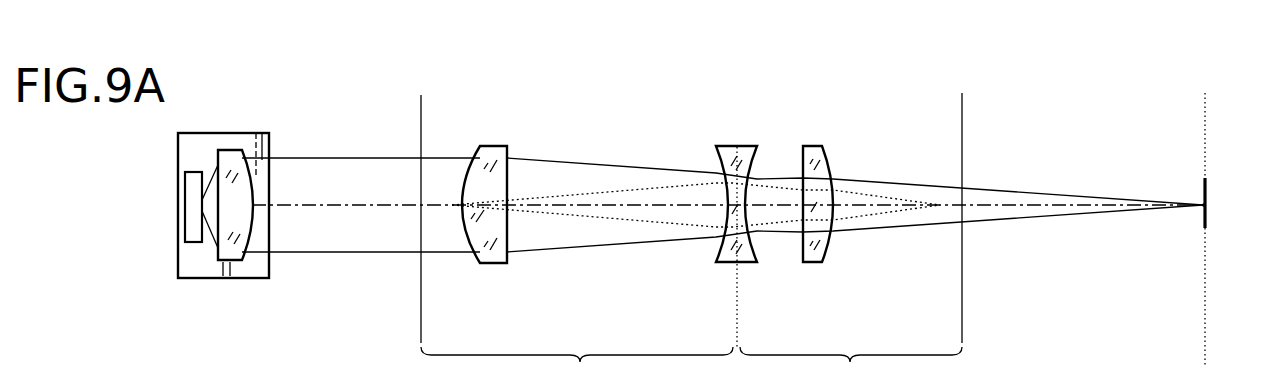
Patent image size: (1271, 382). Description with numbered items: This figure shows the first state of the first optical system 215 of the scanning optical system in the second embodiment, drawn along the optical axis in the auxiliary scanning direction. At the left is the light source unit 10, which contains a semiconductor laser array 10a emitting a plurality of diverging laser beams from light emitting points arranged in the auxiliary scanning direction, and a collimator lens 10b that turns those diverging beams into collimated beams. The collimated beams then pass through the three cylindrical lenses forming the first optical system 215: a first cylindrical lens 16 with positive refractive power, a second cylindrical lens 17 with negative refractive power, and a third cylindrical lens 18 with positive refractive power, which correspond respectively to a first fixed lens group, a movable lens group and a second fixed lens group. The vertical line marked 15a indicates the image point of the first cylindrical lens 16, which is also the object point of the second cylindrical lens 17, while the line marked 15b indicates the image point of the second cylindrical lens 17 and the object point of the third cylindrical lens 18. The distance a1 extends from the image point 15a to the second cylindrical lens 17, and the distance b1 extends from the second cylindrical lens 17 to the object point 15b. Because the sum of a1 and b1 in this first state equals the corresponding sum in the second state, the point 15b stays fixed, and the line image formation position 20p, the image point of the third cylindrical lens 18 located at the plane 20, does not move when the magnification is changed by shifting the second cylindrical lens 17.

The light source unit 10 is at (270, 265).
The semiconductor laser array 10a is at (190, 243).
The collimator lens 10b is at (228, 150).
The image point of the first cylindrical lens 15a is at (964, 202).
The image point of the second cylindrical lens 15b is at (422, 202).
The first cylindrical lens 16 is at (495, 264).
The second cylindrical lens 17 is at (728, 263).
The third cylindrical lens 18 is at (815, 263).
The image plane / recording medium 20 is at (1207, 215).
The line image formation position 20p is at (1200, 200).
The first optical system 215 is at (835, 128).
The distance b1 is at (577, 364).
The distance a1 is at (851, 364).